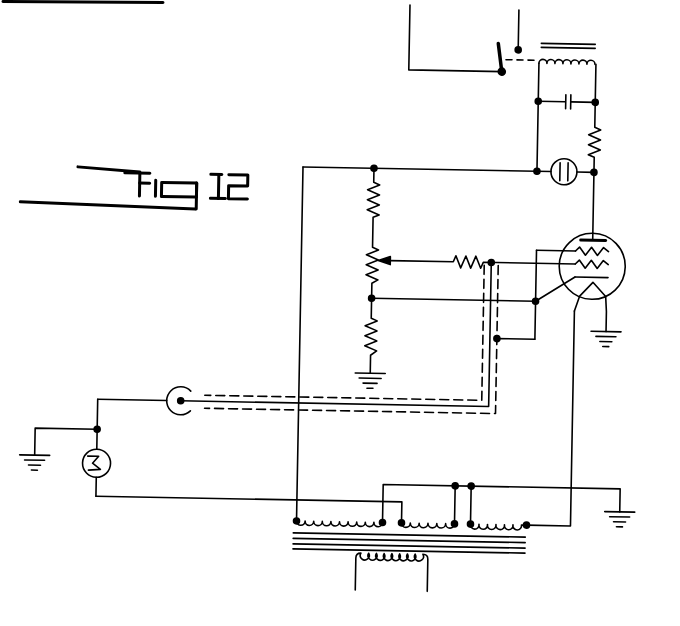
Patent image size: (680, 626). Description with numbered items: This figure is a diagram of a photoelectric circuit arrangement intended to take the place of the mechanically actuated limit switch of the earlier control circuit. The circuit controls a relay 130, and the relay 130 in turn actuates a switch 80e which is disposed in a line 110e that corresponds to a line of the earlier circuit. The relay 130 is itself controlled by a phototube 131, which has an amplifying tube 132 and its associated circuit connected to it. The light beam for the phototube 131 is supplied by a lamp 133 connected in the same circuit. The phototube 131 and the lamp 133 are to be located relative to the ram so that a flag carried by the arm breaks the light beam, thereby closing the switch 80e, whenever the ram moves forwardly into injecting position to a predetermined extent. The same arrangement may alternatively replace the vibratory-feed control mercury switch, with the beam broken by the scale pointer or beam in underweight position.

The line 110e is at (407, 21).
The switch 80e is at (493, 60).
The relay 130 is at (568, 38).
The phototube 131 is at (187, 387).
The amplifying tube 132 is at (622, 252).
The lamp 133 is at (118, 466).